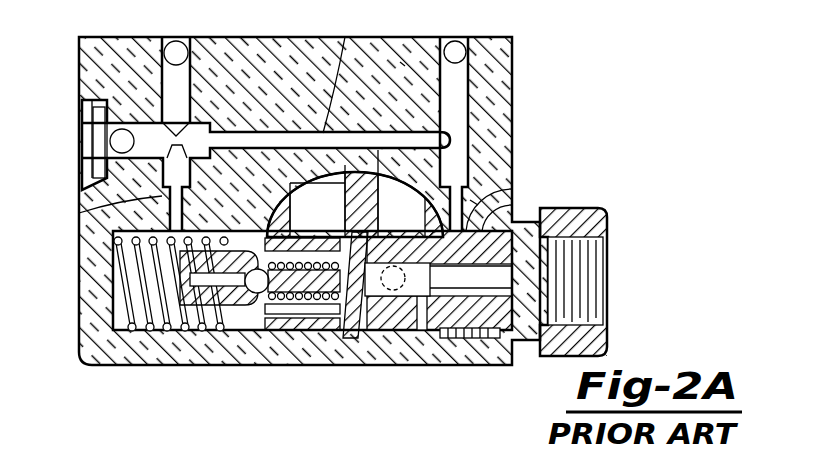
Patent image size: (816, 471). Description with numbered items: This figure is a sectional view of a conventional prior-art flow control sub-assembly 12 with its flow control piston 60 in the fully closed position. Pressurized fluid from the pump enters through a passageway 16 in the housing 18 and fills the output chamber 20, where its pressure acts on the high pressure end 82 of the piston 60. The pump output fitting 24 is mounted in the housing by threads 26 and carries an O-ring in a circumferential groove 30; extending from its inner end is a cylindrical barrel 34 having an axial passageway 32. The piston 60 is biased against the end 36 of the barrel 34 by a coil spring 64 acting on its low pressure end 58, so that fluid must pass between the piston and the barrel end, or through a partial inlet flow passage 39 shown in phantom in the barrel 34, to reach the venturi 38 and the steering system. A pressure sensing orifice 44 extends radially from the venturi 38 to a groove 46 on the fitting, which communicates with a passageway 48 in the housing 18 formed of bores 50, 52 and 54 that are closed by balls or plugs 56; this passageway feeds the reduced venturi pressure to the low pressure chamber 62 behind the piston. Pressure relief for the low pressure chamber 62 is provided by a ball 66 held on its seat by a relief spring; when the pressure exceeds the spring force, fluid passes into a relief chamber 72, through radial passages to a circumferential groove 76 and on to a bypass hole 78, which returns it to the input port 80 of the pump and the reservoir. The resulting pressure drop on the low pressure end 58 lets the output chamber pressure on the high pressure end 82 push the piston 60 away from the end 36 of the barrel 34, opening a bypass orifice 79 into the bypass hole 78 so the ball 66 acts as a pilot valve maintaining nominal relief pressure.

The flow control sub-assembly 12 is at (346, 247).
The passageway 16 is at (403, 62).
The housing 18 is at (522, 118).
The output chamber 20 is at (352, 193).
The output fitting 24 is at (598, 208).
The threads 26 is at (437, 368).
The circumferential groove 30 is at (496, 366).
The axial passageway 32 is at (375, 368).
The cylindrical barrel 34 is at (430, 270).
The end of the barrel 36 is at (328, 365).
The venturi 38 is at (468, 368).
The partial inlet flow passage 39 is at (407, 368).
The pressure sensing orifice 44 is at (525, 215).
The groove 46 is at (478, 200).
The passageway 48 is at (470, 165).
The bore 50 is at (512, 100).
The bore 52 is at (150, 138).
The bore 54 is at (79, 213).
The balls or plugs 56 is at (180, 50).
The low pressure end 58 is at (177, 243).
The piston 60 is at (333, 368).
The low pressure chamber 62 is at (170, 368).
The coil spring 64 is at (160, 365).
The ball 66 is at (180, 280).
The relief chamber 72 is at (248, 365).
The circumferential groove 76 is at (316, 365).
The bypass hole 78 is at (345, 37).
The bypass orifice 79 is at (355, 221).
The input port 80 is at (349, 37).
The high pressure end 82 is at (317, 197).